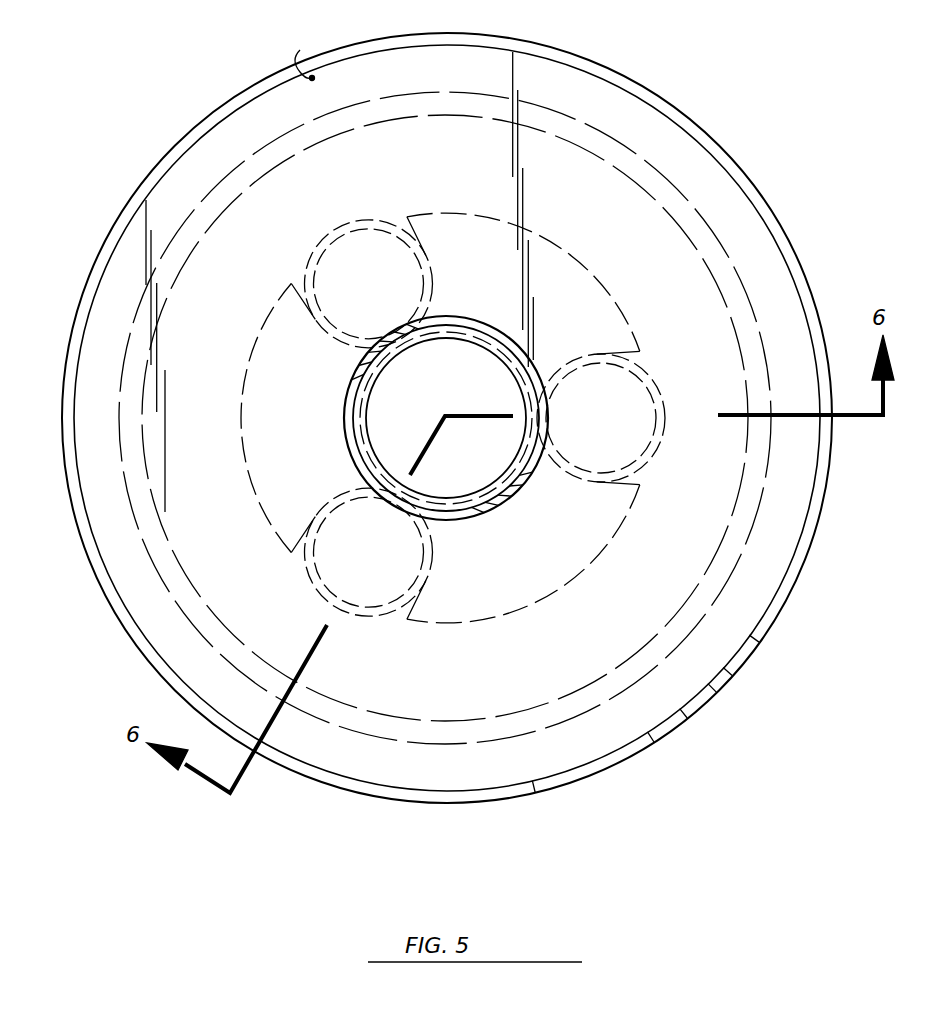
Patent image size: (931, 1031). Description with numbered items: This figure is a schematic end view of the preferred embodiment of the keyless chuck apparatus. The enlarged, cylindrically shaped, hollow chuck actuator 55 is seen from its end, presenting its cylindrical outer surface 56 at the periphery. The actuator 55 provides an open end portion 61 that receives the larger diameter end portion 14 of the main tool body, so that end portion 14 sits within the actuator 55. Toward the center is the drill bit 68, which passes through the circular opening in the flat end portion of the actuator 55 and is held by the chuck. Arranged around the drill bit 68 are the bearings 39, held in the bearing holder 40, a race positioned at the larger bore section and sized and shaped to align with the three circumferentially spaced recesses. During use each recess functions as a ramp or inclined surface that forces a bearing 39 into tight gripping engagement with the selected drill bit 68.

The larger diameter end portion 14 is at (230, 178).
The bearing 39 is at (385, 232).
The bearing holder 40 is at (478, 178).
The chuck actuator 55 is at (739, 167).
The cylindrical outer surface 56 is at (704, 62).
The open end portion 61 is at (300, 50).
The drill bit 68 is at (525, 345).